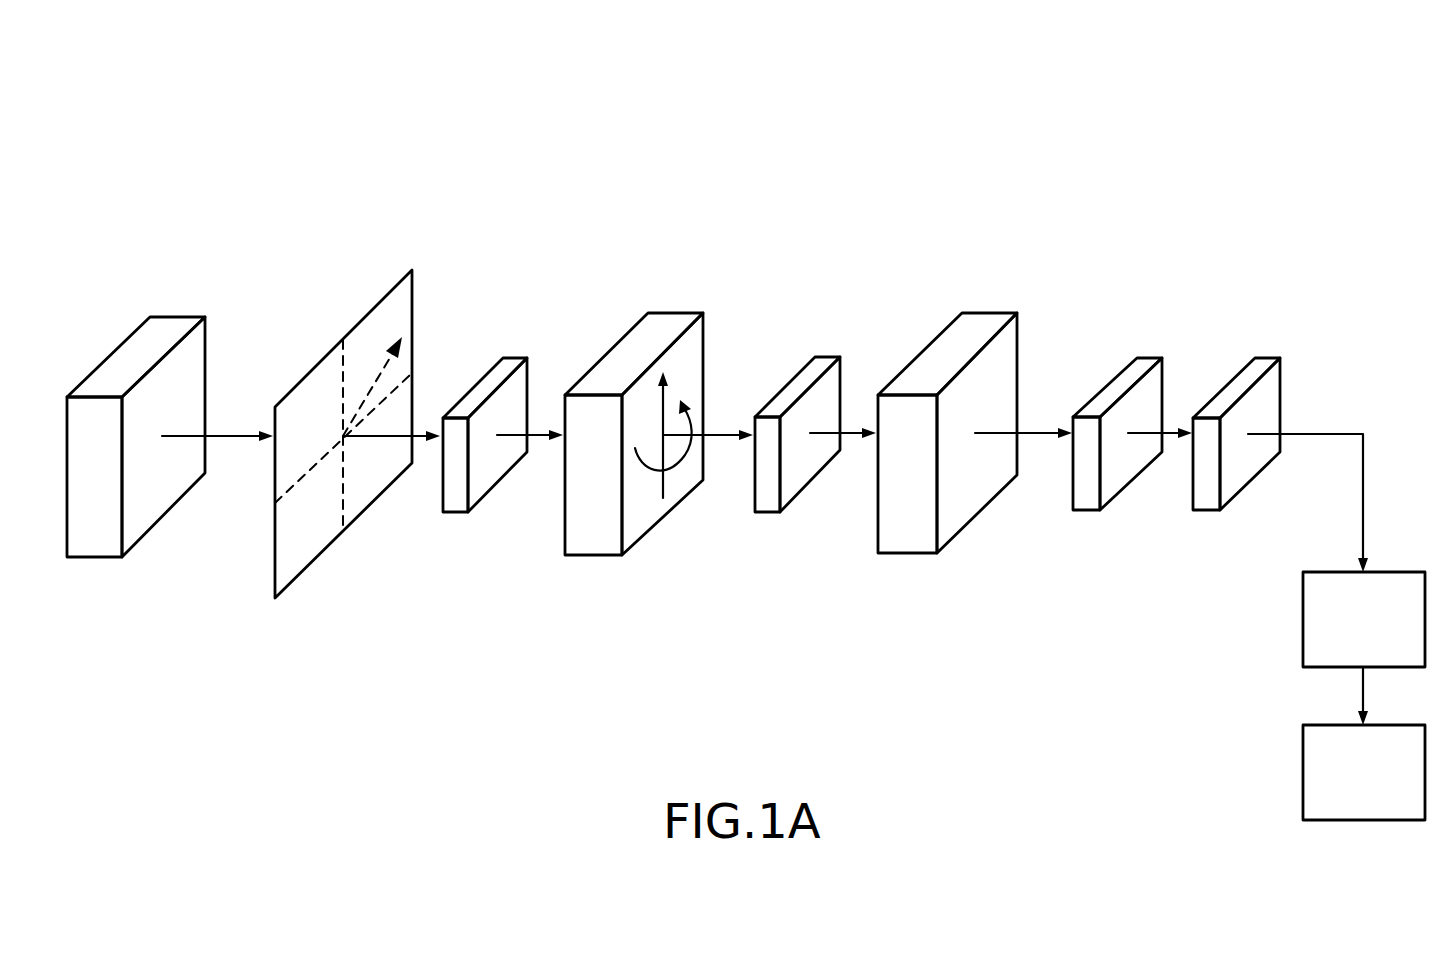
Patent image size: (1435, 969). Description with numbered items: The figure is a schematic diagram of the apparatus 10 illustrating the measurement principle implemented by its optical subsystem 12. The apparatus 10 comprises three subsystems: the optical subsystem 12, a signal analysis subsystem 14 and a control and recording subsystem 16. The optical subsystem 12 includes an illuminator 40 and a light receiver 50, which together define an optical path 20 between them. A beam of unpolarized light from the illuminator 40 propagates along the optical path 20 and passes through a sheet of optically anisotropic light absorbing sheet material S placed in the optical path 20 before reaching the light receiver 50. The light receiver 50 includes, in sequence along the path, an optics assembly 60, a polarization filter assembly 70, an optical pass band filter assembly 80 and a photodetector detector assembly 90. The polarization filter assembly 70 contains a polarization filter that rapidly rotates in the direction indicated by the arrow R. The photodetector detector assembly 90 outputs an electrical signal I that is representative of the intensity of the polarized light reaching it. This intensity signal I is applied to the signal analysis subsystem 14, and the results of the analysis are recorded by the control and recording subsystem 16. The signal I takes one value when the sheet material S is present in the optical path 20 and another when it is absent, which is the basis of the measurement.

The apparatus 10 is at (1160, 174).
The optical subsystem 12 is at (212, 163).
The signal analysis subsystem 14 is at (1364, 619).
The control and recording subsystem 16 is at (1364, 772).
The optical path 20 is at (235, 436).
The illuminator 40 is at (132, 343).
The light receiver 50 is at (505, 262).
The optics assembly 60 is at (455, 512).
The polarization filter assembly 70 is at (620, 347).
The optical pass band filter assembly 80 is at (933, 352).
The photodetector detector assembly 90 is at (1255, 367).
The optically anisotropic light absorbing sheet material S is at (305, 568).
The arrow indicating rotation direction R is at (673, 467).
The electrical signal I is at (1337, 423).